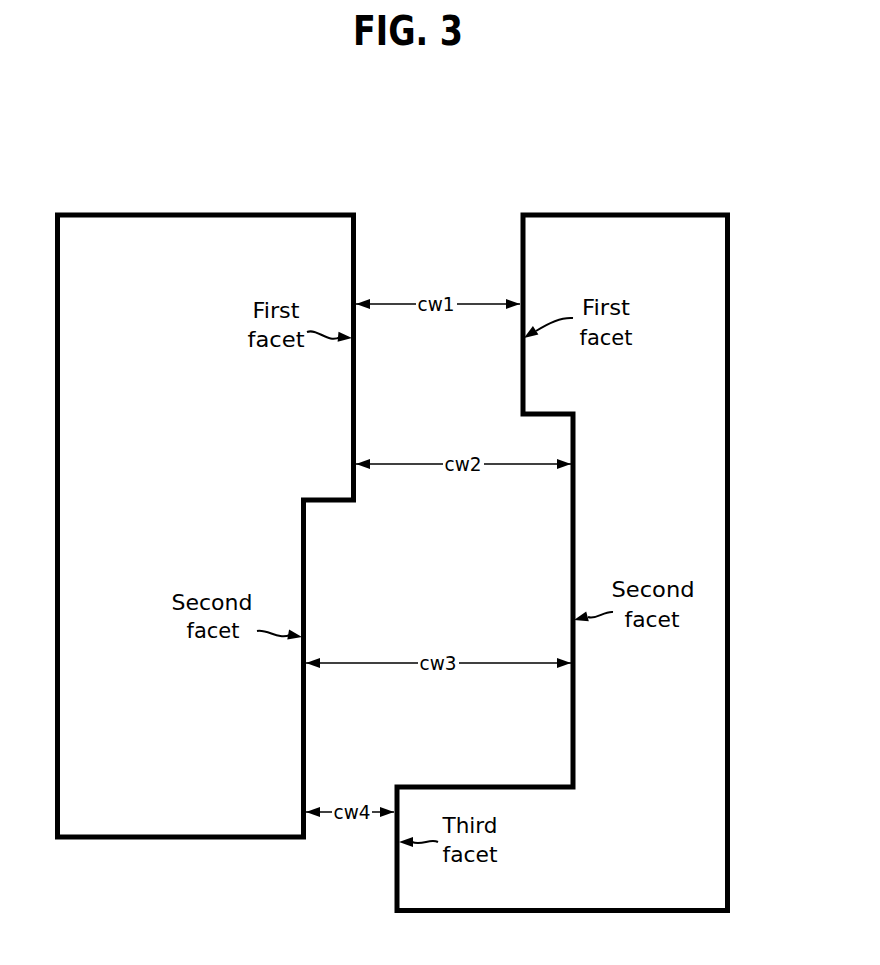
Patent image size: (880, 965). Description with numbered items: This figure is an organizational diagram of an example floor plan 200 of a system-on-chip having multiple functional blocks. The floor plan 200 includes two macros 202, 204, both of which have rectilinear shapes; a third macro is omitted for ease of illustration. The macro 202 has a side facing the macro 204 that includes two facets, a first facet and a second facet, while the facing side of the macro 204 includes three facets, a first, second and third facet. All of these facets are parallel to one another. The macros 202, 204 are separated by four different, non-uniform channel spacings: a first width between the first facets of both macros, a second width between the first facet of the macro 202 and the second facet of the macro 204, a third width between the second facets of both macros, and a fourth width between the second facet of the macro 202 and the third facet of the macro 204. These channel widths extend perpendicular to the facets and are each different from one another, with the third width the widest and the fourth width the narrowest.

The floor plan 200 is at (694, 175).
The macro 202 is at (170, 524).
The macro 204 is at (637, 514).